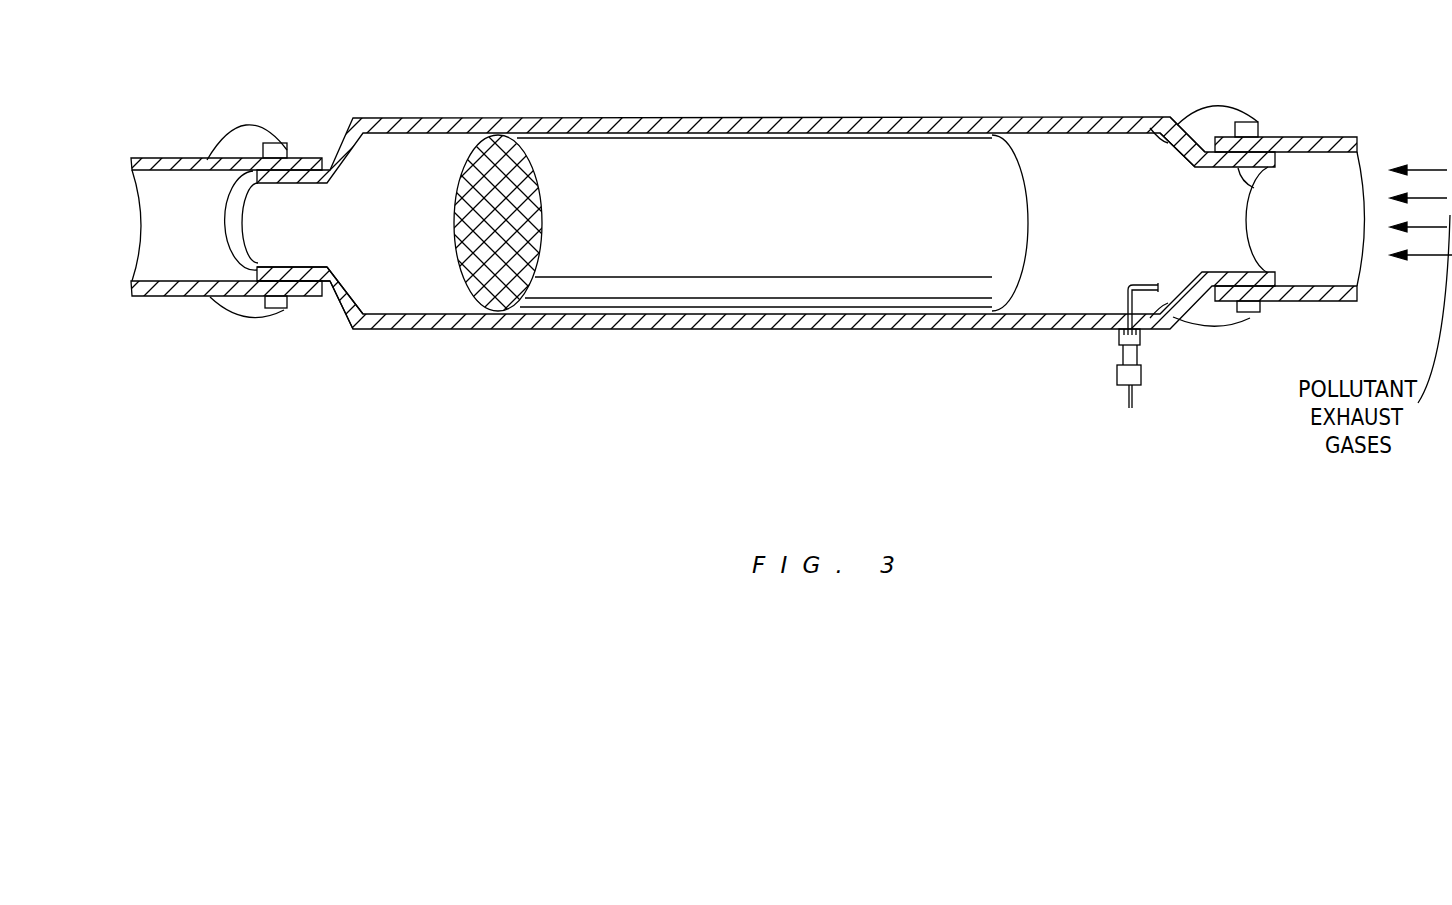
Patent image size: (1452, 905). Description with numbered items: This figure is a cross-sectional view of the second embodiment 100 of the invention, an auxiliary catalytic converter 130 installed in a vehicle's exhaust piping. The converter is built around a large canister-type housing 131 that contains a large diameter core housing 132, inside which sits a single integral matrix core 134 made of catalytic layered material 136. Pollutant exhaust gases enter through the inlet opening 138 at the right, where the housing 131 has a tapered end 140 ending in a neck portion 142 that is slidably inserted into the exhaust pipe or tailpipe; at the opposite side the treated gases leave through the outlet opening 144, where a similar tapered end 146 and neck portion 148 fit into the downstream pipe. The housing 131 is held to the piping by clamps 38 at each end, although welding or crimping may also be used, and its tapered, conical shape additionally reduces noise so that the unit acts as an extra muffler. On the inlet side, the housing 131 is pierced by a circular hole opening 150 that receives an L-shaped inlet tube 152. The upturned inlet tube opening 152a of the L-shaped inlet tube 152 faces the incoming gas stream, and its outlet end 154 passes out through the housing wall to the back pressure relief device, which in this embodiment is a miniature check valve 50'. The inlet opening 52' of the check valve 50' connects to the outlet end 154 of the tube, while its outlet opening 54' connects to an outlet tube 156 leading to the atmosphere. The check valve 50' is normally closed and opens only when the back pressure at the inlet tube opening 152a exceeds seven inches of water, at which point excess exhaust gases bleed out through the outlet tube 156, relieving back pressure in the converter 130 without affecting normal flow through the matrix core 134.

The second embodiment 100 is at (276, 86).
The auxiliary catalytic converter 130 is at (593, 151).
The canister-type housing 131 is at (595, 118).
The core housing 132 is at (682, 268).
The matrix core 134 is at (493, 308).
The catalytic layered material 136 is at (498, 193).
The inlet opening 138 is at (1192, 222).
The tapered end 140 is at (1172, 118).
The neck portion 142 is at (1244, 170).
The outlet opening 144 is at (240, 213).
The tapered end 146 is at (356, 292).
The neck portion 148 is at (282, 268).
The circular hole opening 150 is at (1126, 300).
The L-shaped inlet tube 152 is at (1142, 285).
The inlet tube opening 152a is at (1158, 290).
The outlet end 154 is at (1126, 331).
The check valve 50' is at (1130, 341).
The inlet opening 52' is at (1161, 347).
The outlet opening 54' is at (1158, 378).
The outlet tube 156 is at (1132, 404).
The mounting clamps 38 is at (278, 143).